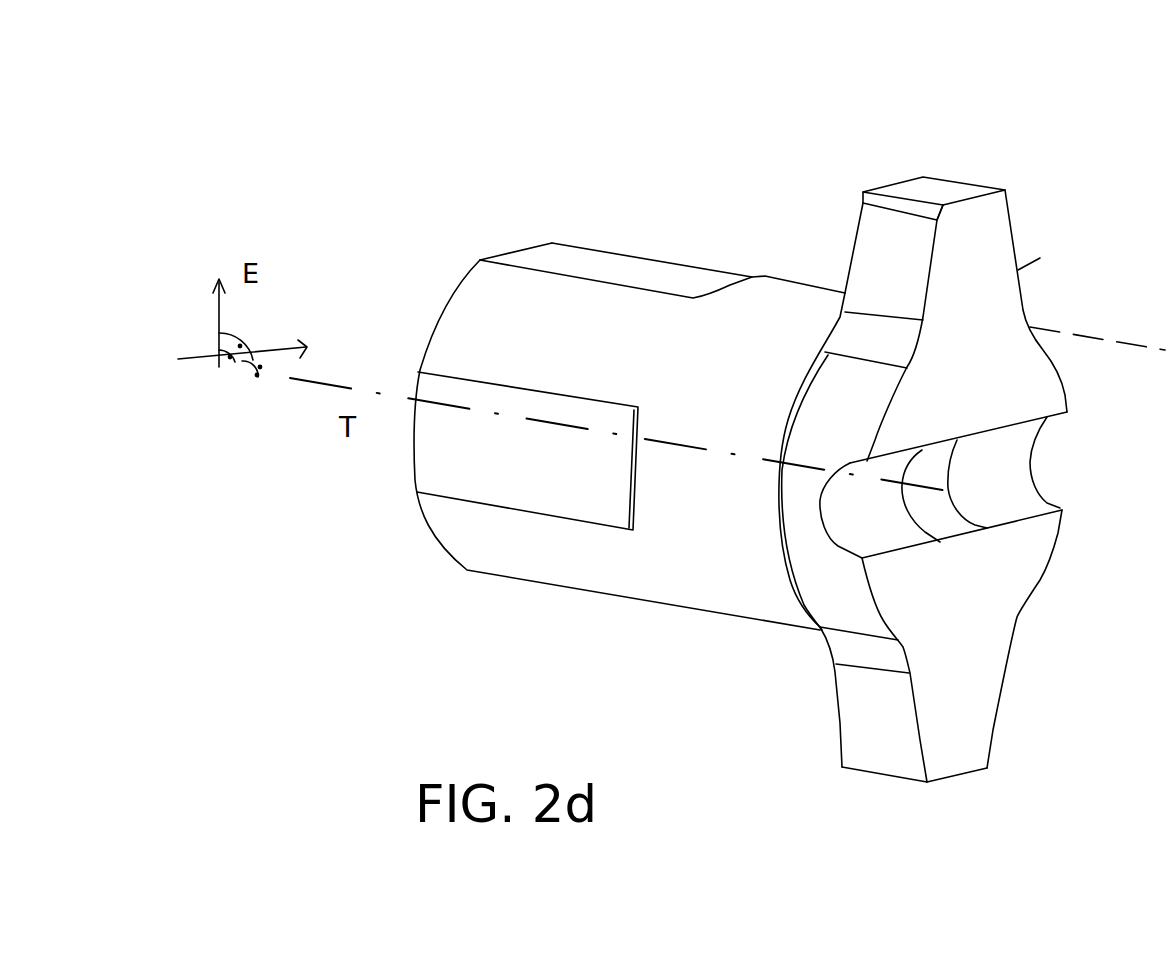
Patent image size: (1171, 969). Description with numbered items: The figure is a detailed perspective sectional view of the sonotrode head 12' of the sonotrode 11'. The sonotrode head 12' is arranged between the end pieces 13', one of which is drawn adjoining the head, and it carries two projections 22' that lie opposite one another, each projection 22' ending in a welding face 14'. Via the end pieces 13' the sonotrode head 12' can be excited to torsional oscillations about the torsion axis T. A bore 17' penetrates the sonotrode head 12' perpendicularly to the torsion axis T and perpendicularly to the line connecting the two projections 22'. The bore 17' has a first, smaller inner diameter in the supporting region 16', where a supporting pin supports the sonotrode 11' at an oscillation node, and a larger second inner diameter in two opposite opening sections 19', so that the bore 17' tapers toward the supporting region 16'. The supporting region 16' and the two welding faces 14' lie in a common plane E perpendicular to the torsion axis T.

The sonotrode 11' is at (789, 343).
The sonotrode head 12' is at (876, 482).
The end piece 13' is at (616, 230).
The welding face 14' is at (956, 482).
The supporting region 16' is at (827, 534).
The bore 17' is at (1104, 441).
The opening section 19' is at (1024, 522).
The projection 22' is at (1039, 473).